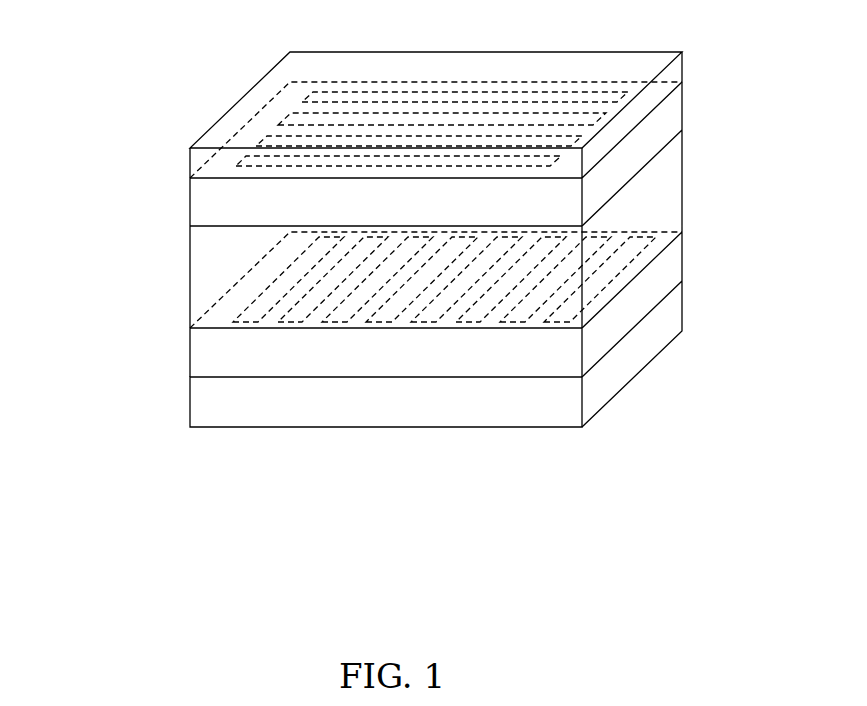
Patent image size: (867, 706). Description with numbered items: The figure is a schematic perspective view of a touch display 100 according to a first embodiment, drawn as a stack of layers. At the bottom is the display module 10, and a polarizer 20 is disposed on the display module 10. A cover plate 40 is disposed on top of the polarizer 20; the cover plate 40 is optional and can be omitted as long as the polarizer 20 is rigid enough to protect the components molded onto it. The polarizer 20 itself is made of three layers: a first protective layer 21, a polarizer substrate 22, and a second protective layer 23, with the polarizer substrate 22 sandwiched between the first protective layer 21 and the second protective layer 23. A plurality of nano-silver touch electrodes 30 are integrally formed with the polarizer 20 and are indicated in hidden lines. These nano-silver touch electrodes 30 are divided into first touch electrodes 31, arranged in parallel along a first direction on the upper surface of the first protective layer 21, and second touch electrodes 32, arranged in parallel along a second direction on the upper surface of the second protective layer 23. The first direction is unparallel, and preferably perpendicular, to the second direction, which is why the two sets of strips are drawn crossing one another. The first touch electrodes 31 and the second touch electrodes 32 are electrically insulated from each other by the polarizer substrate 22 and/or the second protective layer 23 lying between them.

The touch display 100 is at (257, 34).
The display module 10 is at (670, 320).
The polarizer 20 is at (495, 229).
The first protective layer 21 is at (467, 304).
The polarizer substrate 22 is at (670, 195).
The second protective layer 23 is at (670, 118).
The nano-silver touch electrodes 30 is at (358, 205).
The first touch electrodes 31 is at (257, 320).
The second touch electrodes 32 is at (283, 164).
The cover plate 40 is at (670, 74).